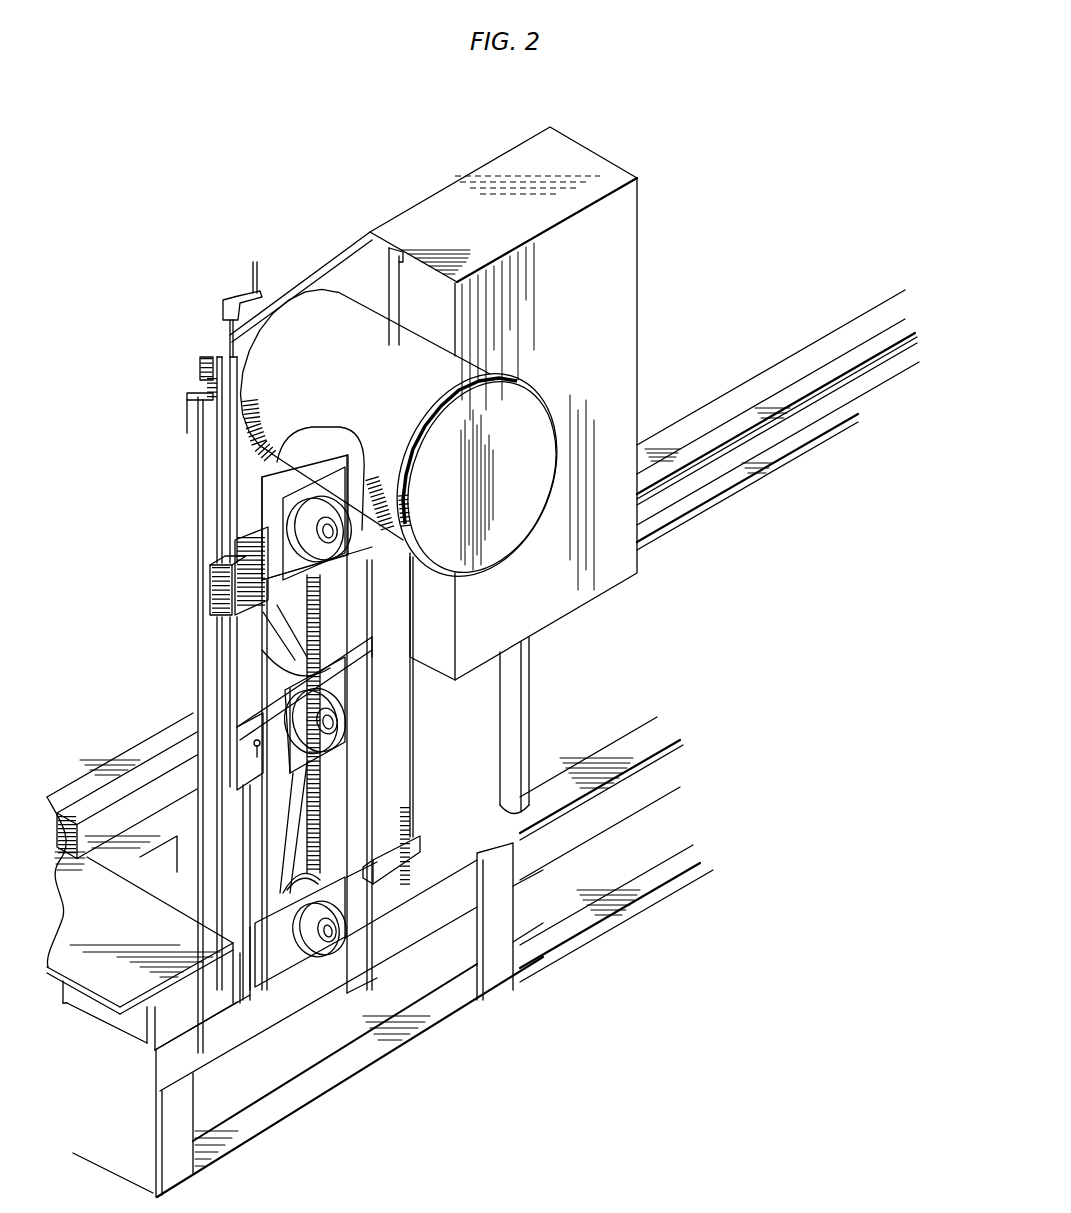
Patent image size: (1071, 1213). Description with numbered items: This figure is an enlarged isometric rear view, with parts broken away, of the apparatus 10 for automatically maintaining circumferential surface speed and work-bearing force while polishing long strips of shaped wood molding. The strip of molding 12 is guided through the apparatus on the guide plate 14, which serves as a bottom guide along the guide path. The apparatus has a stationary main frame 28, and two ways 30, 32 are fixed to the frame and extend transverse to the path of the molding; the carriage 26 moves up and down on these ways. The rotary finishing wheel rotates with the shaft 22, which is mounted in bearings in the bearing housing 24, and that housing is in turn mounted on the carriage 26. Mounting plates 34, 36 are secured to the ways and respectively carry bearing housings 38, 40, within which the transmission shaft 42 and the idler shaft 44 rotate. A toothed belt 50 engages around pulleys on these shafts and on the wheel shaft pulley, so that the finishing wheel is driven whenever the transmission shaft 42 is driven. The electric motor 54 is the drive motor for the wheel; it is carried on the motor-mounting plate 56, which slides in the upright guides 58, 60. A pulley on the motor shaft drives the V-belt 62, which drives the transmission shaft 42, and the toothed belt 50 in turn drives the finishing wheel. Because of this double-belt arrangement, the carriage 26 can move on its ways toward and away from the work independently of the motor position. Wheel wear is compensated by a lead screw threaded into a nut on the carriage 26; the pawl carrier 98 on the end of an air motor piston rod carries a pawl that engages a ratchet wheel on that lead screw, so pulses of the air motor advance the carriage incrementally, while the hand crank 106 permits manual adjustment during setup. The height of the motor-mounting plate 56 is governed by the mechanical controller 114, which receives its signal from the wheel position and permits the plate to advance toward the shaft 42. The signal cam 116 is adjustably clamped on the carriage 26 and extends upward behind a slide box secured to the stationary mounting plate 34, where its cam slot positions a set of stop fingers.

The apparatus 10 is at (675, 300).
The molding 12 is at (738, 433).
The guide plate 14 is at (707, 493).
The shaft 22 is at (332, 726).
The bearing housing 24 is at (347, 712).
The carriage 26 is at (267, 706).
The main frame 28 is at (129, 932).
The way 30 is at (358, 824).
The way 32 is at (203, 451).
The mounting plate 34 is at (267, 487).
The mounting plate 36 is at (363, 913).
The bearing housing 38 is at (318, 533).
The bearing housing 40 is at (325, 943).
The transmission shaft 42 is at (330, 537).
The idler shaft 44 is at (325, 937).
The toothed belt 50 is at (322, 810).
The electric motor 54 is at (382, 412).
The motor-mounting plate 56 is at (318, 277).
The upright guide 58 is at (407, 250).
The upright guide 60 is at (230, 380).
The V-belt 62 is at (322, 610).
The pawl carrier 98 is at (207, 367).
The hand crank 106 is at (238, 288).
The controller 114 is at (205, 600).
The signal cam 116 is at (230, 692).